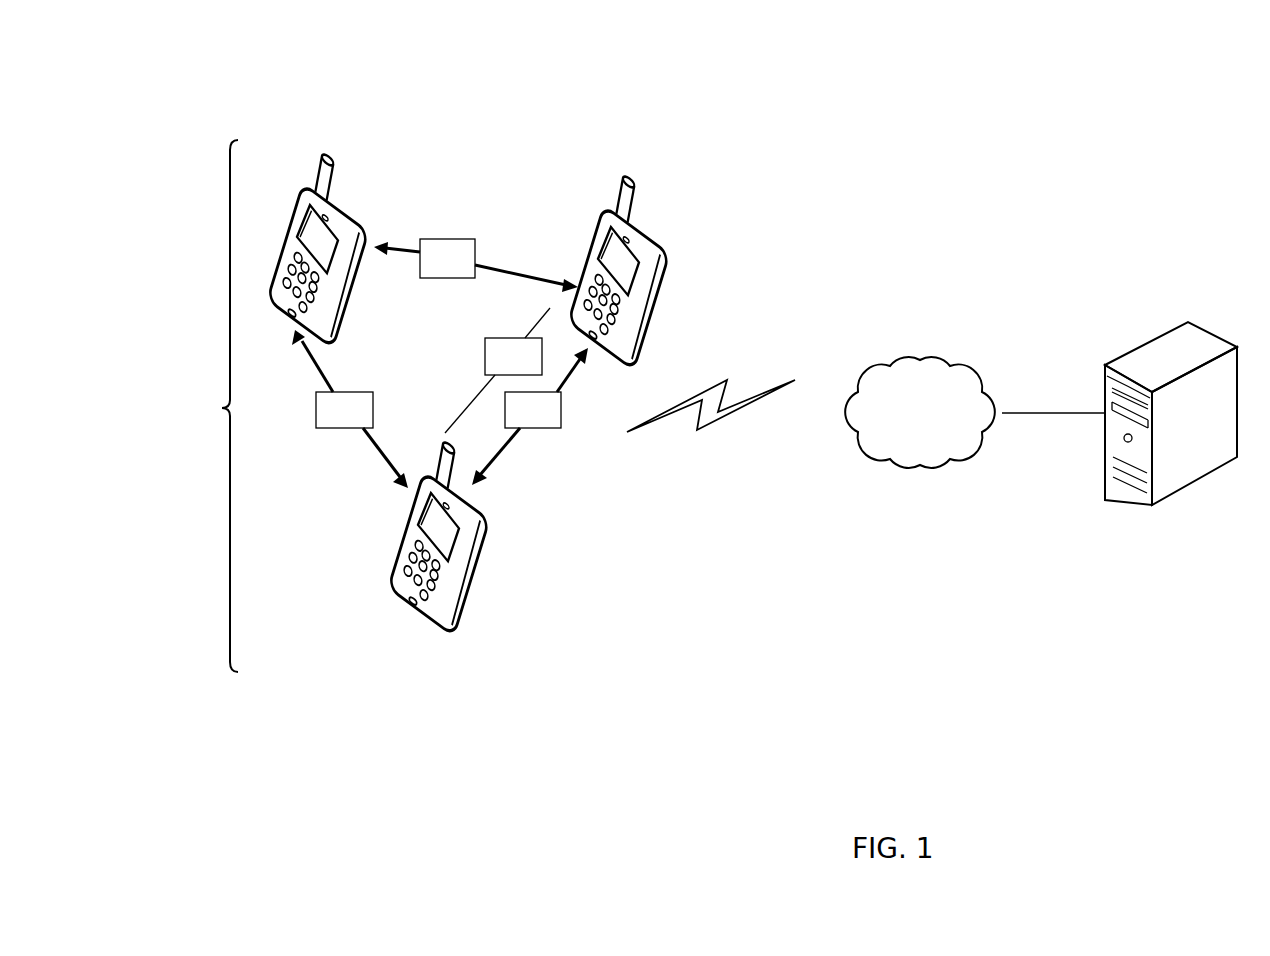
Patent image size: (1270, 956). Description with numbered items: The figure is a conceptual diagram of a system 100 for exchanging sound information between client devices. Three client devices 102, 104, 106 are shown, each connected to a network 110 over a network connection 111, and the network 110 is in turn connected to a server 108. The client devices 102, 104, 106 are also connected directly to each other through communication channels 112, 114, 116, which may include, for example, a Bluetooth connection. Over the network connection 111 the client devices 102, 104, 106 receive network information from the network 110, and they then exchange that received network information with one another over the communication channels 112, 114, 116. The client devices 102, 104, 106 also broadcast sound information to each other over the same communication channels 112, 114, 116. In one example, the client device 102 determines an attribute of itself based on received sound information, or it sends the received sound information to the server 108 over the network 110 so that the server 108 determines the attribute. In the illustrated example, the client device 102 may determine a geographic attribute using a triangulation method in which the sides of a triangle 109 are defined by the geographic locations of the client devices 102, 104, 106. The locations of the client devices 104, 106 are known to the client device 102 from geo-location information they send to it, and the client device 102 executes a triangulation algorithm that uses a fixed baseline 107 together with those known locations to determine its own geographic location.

The system 100 is at (946, 70).
The client device 102 is at (343, 196).
The client device 104 is at (656, 232).
The client device 106 is at (492, 516).
The fixed baseline 107 is at (497, 370).
The server 108 is at (1171, 413).
The triangle 109 is at (184, 406).
The network 110 is at (975, 412).
The network connection 111 is at (730, 378).
The communication channel 112 is at (476, 265).
The communication channel 114 is at (350, 409).
The communication channel 116 is at (530, 416).